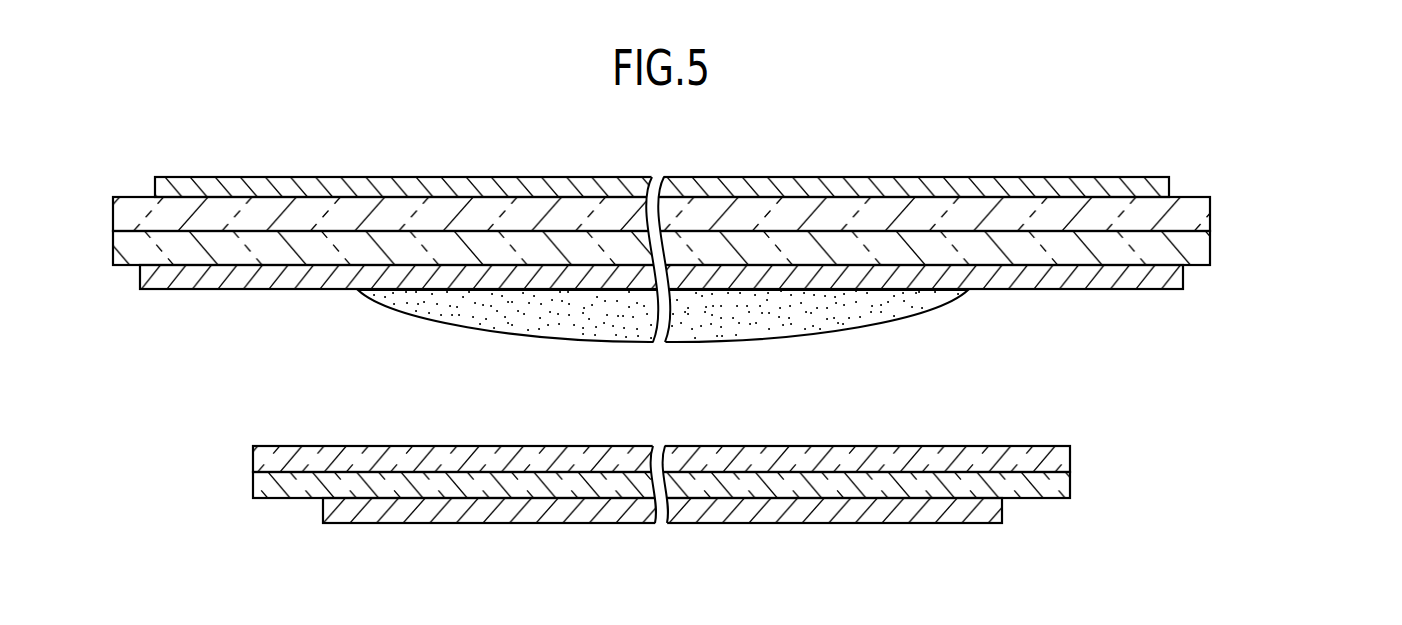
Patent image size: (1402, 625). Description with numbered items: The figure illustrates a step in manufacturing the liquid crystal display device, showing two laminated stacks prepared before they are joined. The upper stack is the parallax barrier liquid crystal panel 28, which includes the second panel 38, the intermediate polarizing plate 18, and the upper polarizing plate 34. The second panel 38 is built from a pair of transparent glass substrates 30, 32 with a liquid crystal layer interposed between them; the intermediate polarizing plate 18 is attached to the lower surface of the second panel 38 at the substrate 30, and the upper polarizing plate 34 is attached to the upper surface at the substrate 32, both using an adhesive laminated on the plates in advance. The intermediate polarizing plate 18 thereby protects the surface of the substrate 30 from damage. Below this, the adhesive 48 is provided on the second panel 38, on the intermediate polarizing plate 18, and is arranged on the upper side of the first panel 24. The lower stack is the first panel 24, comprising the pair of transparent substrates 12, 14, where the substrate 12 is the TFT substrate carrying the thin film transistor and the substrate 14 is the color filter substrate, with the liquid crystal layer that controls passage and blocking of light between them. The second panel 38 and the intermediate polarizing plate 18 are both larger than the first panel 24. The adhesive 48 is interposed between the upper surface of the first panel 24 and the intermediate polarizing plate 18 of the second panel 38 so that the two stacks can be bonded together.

The substrate 12 is at (697, 490).
The substrate 14 is at (1057, 460).
The intermediate polarizing plate 18 is at (735, 278).
The first panel 24 is at (725, 483).
The parallax barrier liquid crystal panel 28 is at (747, 225).
The substrate 30 is at (1197, 247).
The substrate 32 is at (1197, 215).
The upper polarizing plate 34 is at (1160, 190).
The second panel 38 is at (721, 228).
The adhesive 48 is at (887, 312).